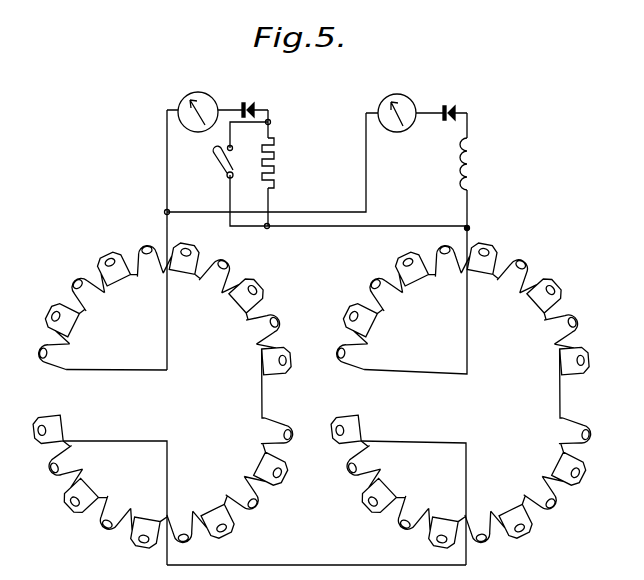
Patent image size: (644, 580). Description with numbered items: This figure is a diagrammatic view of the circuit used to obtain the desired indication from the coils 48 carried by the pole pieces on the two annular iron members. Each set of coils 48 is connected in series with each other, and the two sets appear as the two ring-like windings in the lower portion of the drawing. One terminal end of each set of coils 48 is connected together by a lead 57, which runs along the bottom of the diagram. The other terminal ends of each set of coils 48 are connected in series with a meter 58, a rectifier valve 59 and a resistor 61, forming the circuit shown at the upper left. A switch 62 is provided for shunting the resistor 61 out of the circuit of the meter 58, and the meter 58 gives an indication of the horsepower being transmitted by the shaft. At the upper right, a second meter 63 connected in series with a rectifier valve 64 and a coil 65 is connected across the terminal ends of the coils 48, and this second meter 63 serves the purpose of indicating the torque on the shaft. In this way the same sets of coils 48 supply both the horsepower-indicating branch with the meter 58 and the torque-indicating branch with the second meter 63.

The coils 48 is at (80, 283).
The lead 57 is at (290, 563).
The meter 58 is at (185, 96).
The rectifier valve 59 is at (252, 108).
The resistor 61 is at (276, 164).
The switch 62 is at (224, 168).
The second meter 63 is at (412, 104).
The rectifier valve 64 is at (458, 111).
The coil 65 is at (478, 163).